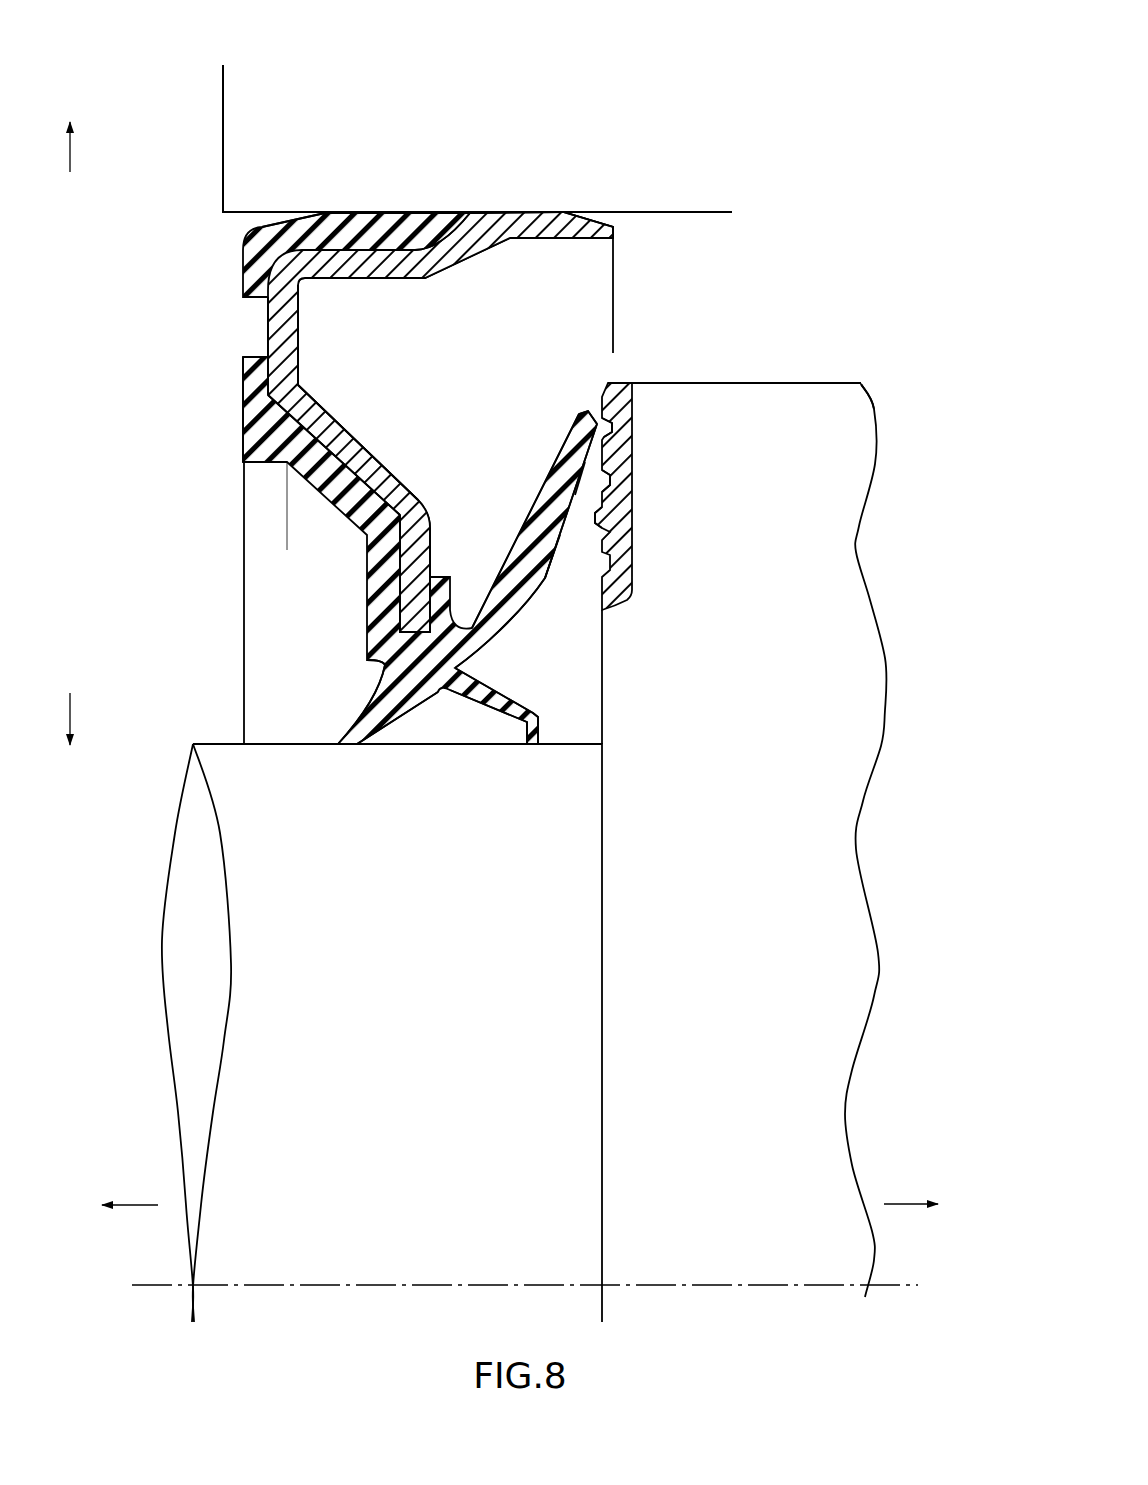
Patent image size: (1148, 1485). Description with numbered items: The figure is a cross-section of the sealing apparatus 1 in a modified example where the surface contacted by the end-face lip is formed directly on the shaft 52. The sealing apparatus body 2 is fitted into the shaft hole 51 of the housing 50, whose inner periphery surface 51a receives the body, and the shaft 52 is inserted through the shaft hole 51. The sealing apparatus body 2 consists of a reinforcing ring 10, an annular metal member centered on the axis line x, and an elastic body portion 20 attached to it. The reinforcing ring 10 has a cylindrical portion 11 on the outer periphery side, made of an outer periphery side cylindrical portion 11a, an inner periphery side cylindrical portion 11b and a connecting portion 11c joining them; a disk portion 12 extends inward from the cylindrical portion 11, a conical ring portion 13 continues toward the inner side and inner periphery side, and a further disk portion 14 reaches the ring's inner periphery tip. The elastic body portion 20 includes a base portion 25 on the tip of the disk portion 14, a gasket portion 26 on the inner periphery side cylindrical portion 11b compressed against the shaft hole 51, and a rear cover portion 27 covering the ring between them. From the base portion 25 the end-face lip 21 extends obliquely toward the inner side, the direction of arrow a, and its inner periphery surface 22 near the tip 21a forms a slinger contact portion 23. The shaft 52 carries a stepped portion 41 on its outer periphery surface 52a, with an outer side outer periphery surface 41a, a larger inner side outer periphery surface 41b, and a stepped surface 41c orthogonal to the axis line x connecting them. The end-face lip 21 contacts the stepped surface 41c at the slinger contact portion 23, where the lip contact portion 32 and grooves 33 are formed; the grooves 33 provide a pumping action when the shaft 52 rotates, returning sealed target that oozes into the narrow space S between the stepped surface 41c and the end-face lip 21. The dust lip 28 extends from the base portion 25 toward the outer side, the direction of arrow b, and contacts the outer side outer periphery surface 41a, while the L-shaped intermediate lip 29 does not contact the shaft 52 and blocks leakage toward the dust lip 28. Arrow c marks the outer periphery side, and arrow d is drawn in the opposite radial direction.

The sealing apparatus 1 is at (210, 232).
The sealing apparatus body 2 is at (190, 305).
The reinforcing ring 10 is at (379, 462).
The cylindrical portion 11 is at (440, 374).
The outer periphery side cylindrical portion 11a is at (537, 210).
The inner periphery side cylindrical portion 11b is at (387, 258).
The connecting portion 11c is at (478, 245).
The disk portion 12 is at (285, 325).
The conical ring portion 13 is at (356, 430).
The disk portion 14 is at (425, 515).
The elastic body portion 20 is at (379, 462).
The end-face lip 21 is at (527, 488).
The tip 21a is at (587, 423).
The inner periphery surface 22 is at (547, 583).
The slinger contact portion 23 is at (603, 430).
The base portion 25 is at (372, 655).
The gasket portion 26 is at (350, 225).
The rear cover portion 27 is at (243, 413).
The dust lip 28 is at (360, 715).
The intermediate lip 29 is at (510, 748).
The lip contact portion 32 is at (606, 485).
The grooves 33 is at (600, 530).
The stepped portion 41 is at (575, 813).
The outer side outer periphery surface 41a is at (286, 747).
The inner side outer periphery surface 41b is at (830, 383).
The stepped surface 41c is at (612, 385).
The housing 50 is at (705, 85).
The shaft hole 51 is at (690, 284).
The inner periphery surface 51a is at (700, 213).
The shaft 52 is at (160, 980).
The outer periphery surface 52a is at (808, 372).
The narrow space S is at (563, 483).
The arrow a is at (911, 1221).
The arrow b is at (130, 1223).
The arrow c is at (83, 147).
The direction d is at (84, 719).
The axis line x is at (912, 1288).